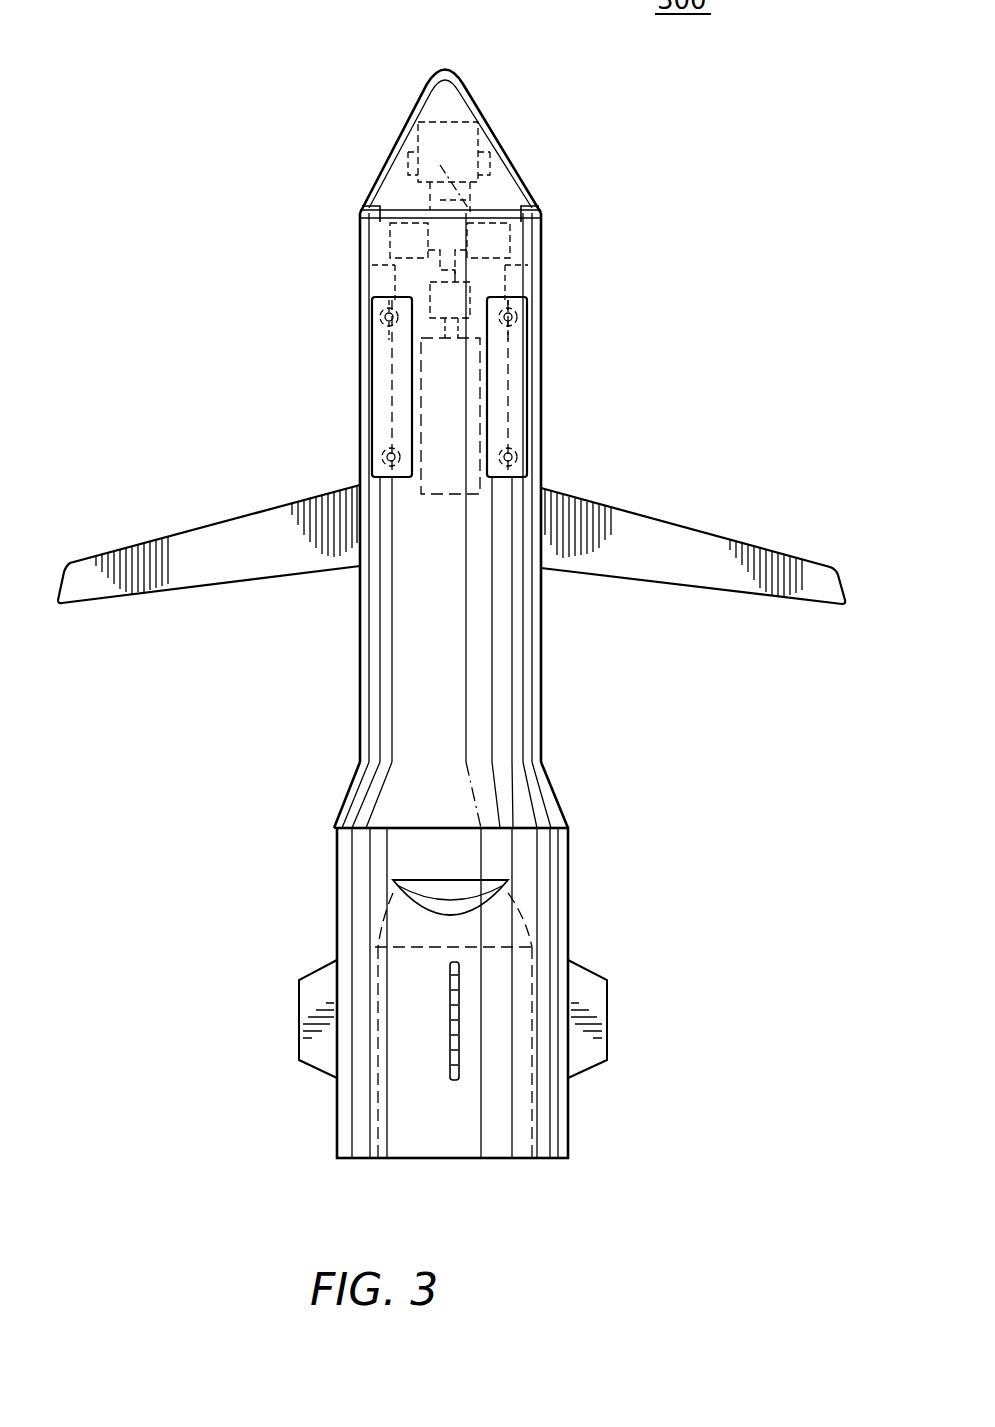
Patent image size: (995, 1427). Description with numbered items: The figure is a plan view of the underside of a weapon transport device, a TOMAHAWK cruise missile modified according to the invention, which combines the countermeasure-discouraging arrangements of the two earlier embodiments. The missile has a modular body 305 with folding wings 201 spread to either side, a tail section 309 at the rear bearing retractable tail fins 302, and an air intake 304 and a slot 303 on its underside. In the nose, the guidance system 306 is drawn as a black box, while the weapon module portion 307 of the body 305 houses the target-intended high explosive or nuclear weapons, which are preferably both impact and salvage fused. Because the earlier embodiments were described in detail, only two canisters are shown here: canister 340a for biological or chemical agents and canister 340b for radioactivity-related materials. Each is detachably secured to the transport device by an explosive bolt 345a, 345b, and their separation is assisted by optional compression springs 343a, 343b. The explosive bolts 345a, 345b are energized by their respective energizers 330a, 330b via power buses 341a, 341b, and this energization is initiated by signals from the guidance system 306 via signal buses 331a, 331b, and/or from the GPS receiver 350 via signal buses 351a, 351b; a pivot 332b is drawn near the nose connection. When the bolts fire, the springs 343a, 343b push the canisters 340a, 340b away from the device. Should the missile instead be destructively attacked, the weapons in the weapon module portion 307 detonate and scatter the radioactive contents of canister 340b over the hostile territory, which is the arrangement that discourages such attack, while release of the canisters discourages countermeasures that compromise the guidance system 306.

The wing 201 is at (695, 545).
The tail fin 302 is at (583, 1027).
The slot 303 is at (455, 1005).
The window 304 is at (470, 888).
The body 305 is at (505, 683).
The guidance system 306 is at (455, 137).
The weapon module portion 307 is at (463, 485).
The tail section 309 is at (505, 1128).
The energizer 330a is at (365, 208).
The energizer 330b is at (540, 216).
The signal bus 331a is at (405, 158).
The signal bus 331b is at (478, 168).
The pivot 332b is at (458, 206).
The canister 340a is at (380, 423).
The canister 340b is at (517, 435).
The power bus 341a is at (365, 272).
The power bus 341b is at (535, 288).
The compression spring 343a is at (362, 310).
The compression spring 343b is at (517, 315).
The explosive bolt 345a is at (390, 460).
The explosive bolt 345b is at (523, 460).
The GPS receiver 350 is at (545, 273).
The signal bus 351a is at (395, 240).
The signal bus 351b is at (538, 247).